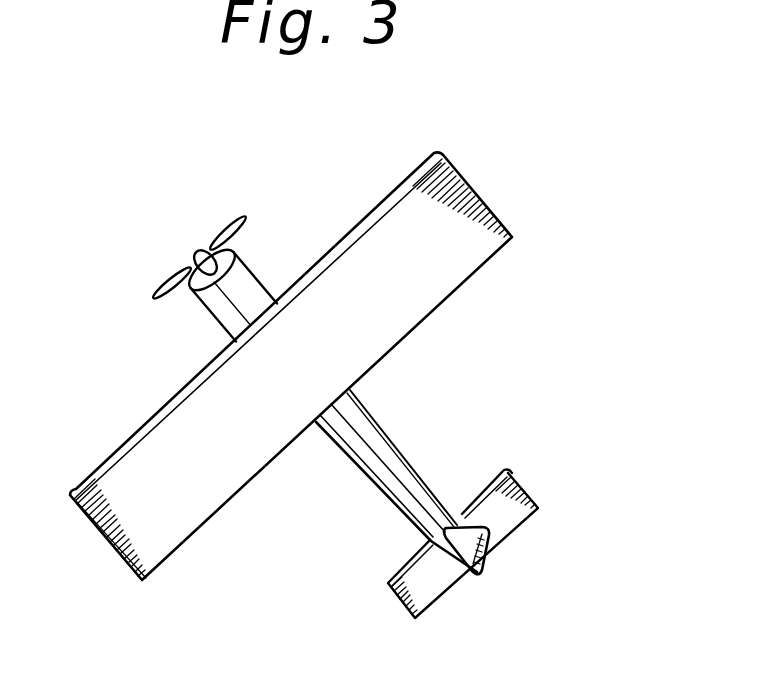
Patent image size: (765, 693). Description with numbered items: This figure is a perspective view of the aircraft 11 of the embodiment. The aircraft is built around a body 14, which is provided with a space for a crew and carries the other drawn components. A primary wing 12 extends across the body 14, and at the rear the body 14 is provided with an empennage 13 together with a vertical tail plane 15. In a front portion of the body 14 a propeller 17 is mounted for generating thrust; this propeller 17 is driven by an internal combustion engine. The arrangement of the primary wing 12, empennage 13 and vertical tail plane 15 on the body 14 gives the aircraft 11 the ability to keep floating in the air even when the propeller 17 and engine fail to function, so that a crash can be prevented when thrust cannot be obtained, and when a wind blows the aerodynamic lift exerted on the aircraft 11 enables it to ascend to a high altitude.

The aircraft 11 is at (552, 257).
The primary wing 12 is at (188, 520).
The empennage 13 is at (523, 508).
The body 14 is at (402, 468).
The vertical tail plane 15 is at (487, 537).
The propeller 17 is at (242, 213).